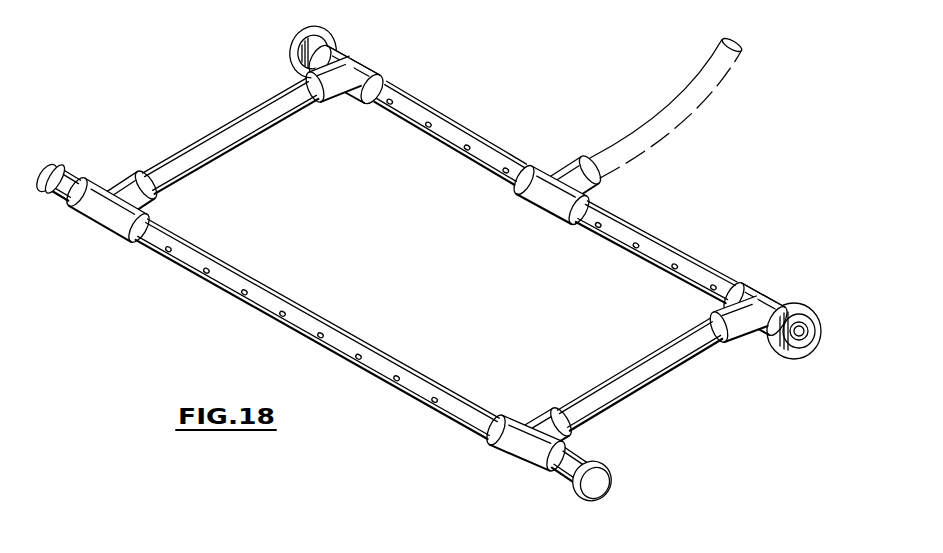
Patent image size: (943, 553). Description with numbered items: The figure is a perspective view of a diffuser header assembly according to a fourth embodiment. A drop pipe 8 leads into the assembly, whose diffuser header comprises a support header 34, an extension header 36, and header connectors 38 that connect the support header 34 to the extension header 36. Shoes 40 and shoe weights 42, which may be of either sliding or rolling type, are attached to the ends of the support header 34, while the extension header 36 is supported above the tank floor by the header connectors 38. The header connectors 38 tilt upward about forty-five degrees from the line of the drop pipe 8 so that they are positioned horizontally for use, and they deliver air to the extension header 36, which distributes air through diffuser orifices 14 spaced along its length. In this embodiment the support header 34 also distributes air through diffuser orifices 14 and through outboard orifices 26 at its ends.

The drop pipe 8 is at (671, 121).
The diffuser orifices 14 is at (464, 152).
The outboard orifices 26 is at (803, 343).
The support header 34 is at (440, 122).
The extension header 36 is at (311, 314).
The header connectors 38 is at (243, 163).
The shoes 40 is at (309, 31).
The shoe weights 42 is at (332, 41).